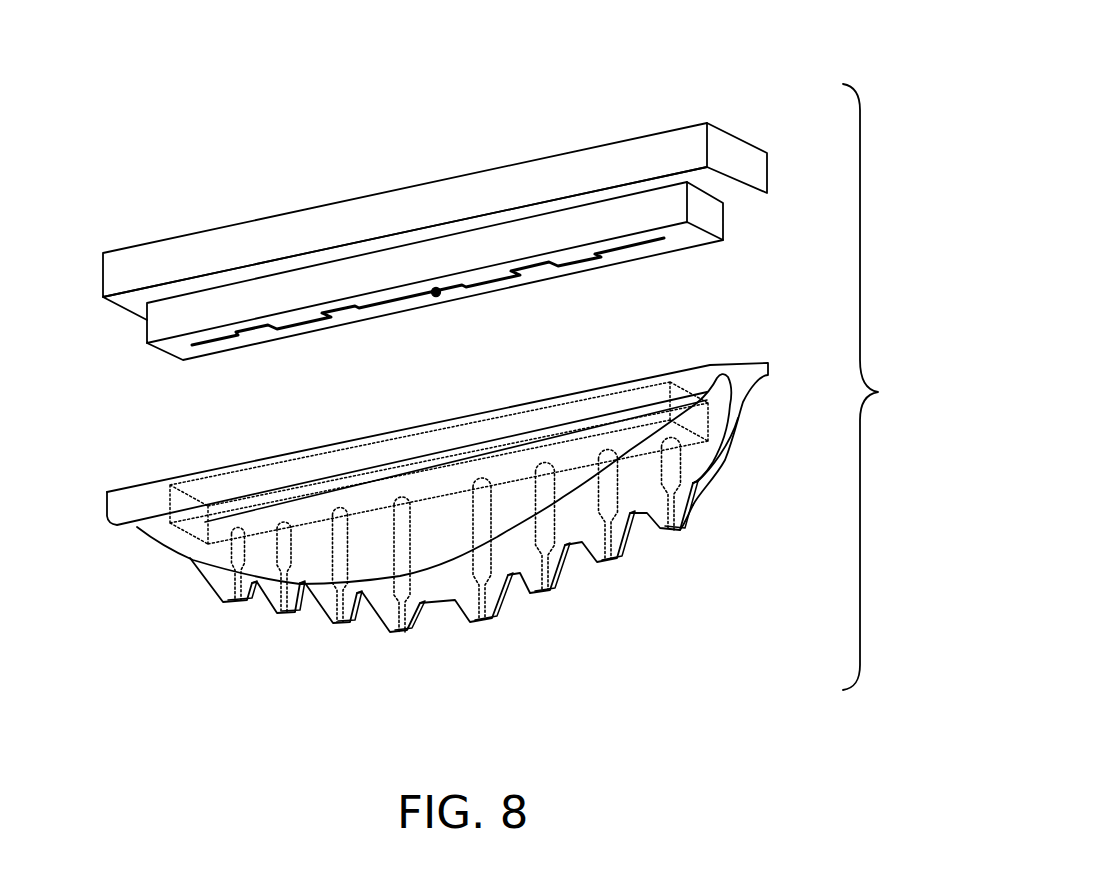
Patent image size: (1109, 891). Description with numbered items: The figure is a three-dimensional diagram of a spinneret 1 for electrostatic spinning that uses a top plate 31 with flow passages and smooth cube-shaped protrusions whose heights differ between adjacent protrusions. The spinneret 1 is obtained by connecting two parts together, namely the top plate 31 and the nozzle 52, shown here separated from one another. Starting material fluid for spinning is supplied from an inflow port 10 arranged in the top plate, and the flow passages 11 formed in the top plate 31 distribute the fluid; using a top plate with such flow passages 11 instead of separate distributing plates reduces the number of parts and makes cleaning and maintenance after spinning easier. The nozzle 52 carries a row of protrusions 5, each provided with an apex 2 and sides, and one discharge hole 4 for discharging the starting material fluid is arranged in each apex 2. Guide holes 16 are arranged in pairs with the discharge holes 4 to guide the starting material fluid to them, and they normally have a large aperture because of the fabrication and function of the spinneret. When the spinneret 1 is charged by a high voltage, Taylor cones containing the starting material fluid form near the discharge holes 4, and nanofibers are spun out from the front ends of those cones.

The spinneret for electrostatic spinning 1 is at (676, 62).
The top plate with flow passages 31 is at (128, 320).
The flow passages 11 is at (237, 340).
The inflow port 10 is at (437, 298).
The nozzle 52 is at (134, 533).
The protrusions 5 is at (380, 620).
The apex 2 is at (492, 620).
The discharge hole 4 is at (672, 535).
The guide holes 16 is at (676, 470).